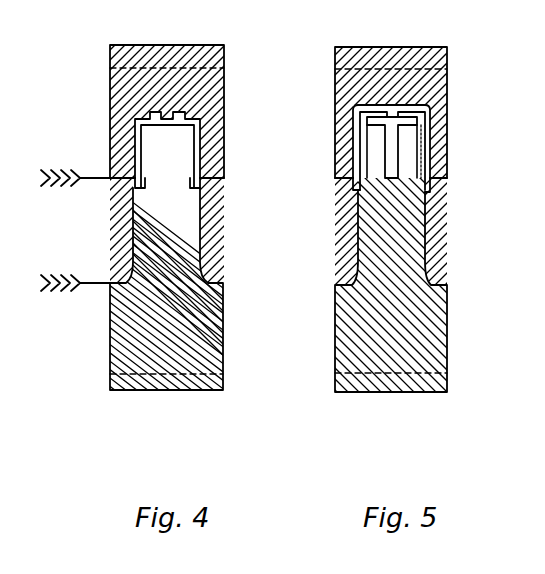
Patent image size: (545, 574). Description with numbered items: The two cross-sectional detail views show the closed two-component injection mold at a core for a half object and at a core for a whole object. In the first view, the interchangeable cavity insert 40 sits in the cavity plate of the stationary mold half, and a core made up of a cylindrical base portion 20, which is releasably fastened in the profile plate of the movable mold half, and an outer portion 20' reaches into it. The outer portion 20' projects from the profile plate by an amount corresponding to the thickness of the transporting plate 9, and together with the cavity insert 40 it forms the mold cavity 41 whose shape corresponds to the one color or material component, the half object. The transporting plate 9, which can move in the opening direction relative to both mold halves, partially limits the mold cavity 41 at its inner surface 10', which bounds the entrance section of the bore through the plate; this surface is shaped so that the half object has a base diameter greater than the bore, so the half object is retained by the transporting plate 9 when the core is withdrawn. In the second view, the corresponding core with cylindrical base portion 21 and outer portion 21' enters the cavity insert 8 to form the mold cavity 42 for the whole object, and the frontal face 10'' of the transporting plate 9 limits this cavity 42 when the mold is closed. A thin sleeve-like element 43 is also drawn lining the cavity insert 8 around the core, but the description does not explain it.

In FIG. 4, the cavity insert 40 is at (200, 95).
In FIG. 4, the outer portion of core 20' is at (157, 246).
In FIG. 4, the mold cavity 41 is at (197, 158).
In FIG. 4, the inner surface 10' is at (173, 198).
In FIG. 4, the transporting plate 9 is at (213, 242).
In FIG. 5, the transporting plate 9 is at (347, 243).
In FIG. 4, the cylindrical base portion of core 20 is at (190, 289).
In FIG. 5, the cavity insert 8 is at (433, 93).
In FIG. 5, the mold cavity 42 is at (428, 130).
In FIG. 5, the inner sleeve 43 is at (420, 165).
In FIG. 5, the outer portion of core 21' is at (356, 147).
In FIG. 5, the frontal face 10'' is at (406, 192).
In FIG. 5, the cylindrical base portion of core 21 is at (328, 285).